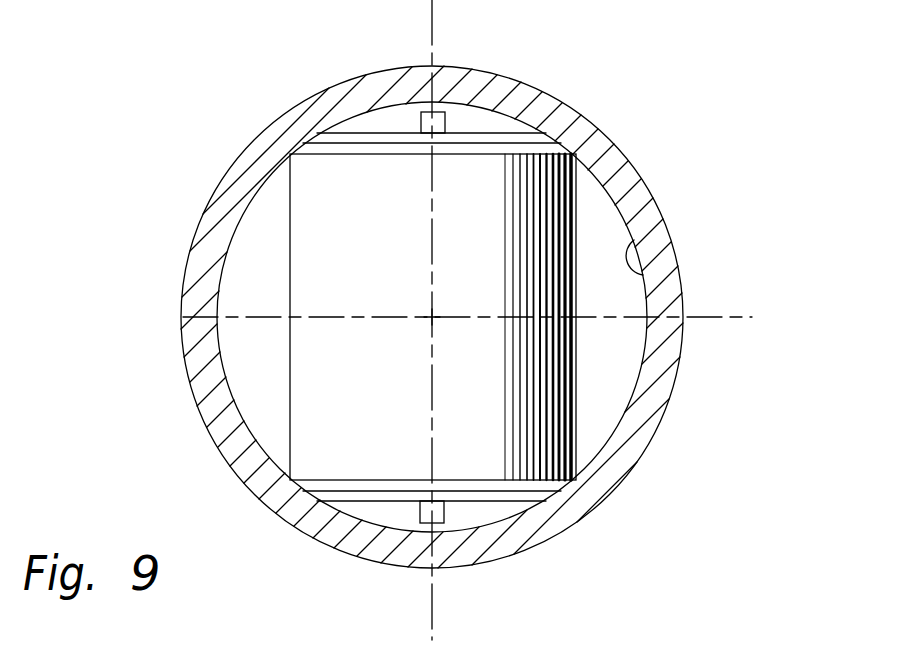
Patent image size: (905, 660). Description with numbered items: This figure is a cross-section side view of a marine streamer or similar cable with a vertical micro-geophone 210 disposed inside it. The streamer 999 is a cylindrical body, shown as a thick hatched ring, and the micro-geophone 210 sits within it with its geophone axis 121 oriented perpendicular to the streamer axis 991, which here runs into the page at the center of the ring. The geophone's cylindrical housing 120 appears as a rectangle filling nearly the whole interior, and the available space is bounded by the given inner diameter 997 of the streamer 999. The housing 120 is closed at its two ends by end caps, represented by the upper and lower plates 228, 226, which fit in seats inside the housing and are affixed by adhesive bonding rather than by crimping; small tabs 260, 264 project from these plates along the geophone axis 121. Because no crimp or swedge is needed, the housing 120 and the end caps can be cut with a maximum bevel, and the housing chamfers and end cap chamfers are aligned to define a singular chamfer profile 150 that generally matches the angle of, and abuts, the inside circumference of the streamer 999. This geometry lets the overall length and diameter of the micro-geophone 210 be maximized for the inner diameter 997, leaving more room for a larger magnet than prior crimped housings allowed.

The geophone axis 121 is at (434, 23).
The streamer 999 is at (642, 184).
The inner diameter 997 is at (632, 243).
The cylindrical housing 120 is at (577, 412).
The micro-geophone 210 is at (577, 350).
The chamfer 150 is at (562, 143).
The upper plate 228 is at (498, 133).
The lower plate 226 is at (497, 501).
The upper tab 260 is at (419, 120).
The lower tab 264 is at (418, 513).
The streamer axis 991 is at (430, 316).